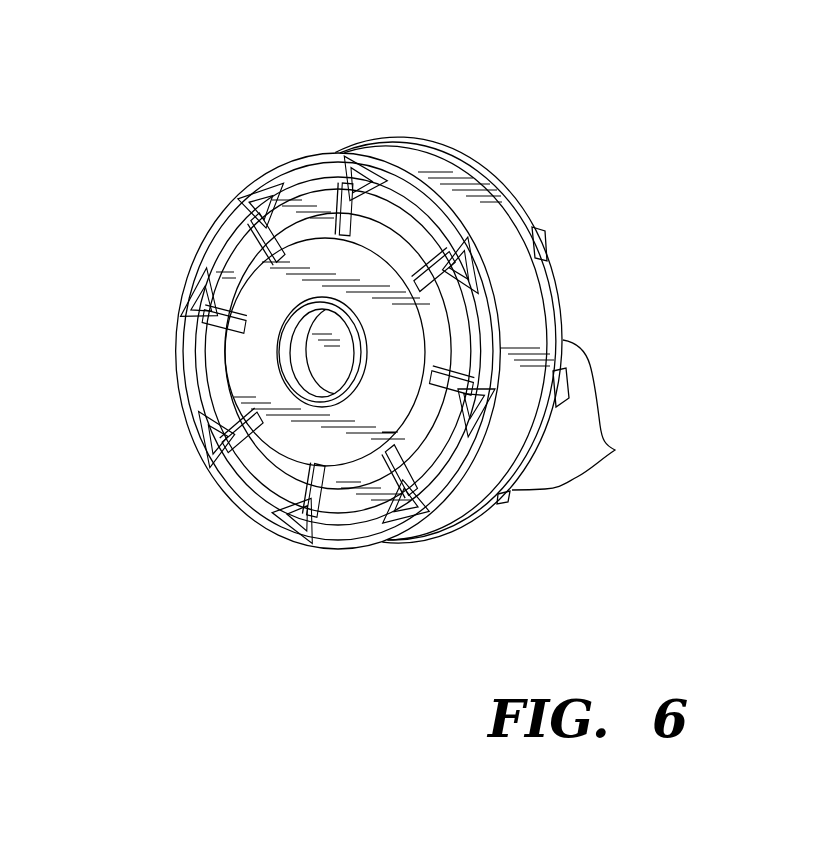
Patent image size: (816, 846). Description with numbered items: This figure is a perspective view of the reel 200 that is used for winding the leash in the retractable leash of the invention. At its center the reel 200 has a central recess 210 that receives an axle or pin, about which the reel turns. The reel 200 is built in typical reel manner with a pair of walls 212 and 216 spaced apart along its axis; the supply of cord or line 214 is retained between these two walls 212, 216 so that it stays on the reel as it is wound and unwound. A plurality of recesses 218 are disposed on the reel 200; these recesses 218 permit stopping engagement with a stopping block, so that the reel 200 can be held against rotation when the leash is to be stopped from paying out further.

The reel 200 is at (480, 120).
The central recess 210 is at (318, 353).
The wall 212 is at (257, 168).
The cord or line 214 is at (493, 230).
The wall 216 is at (560, 296).
The recess 218 is at (413, 197).